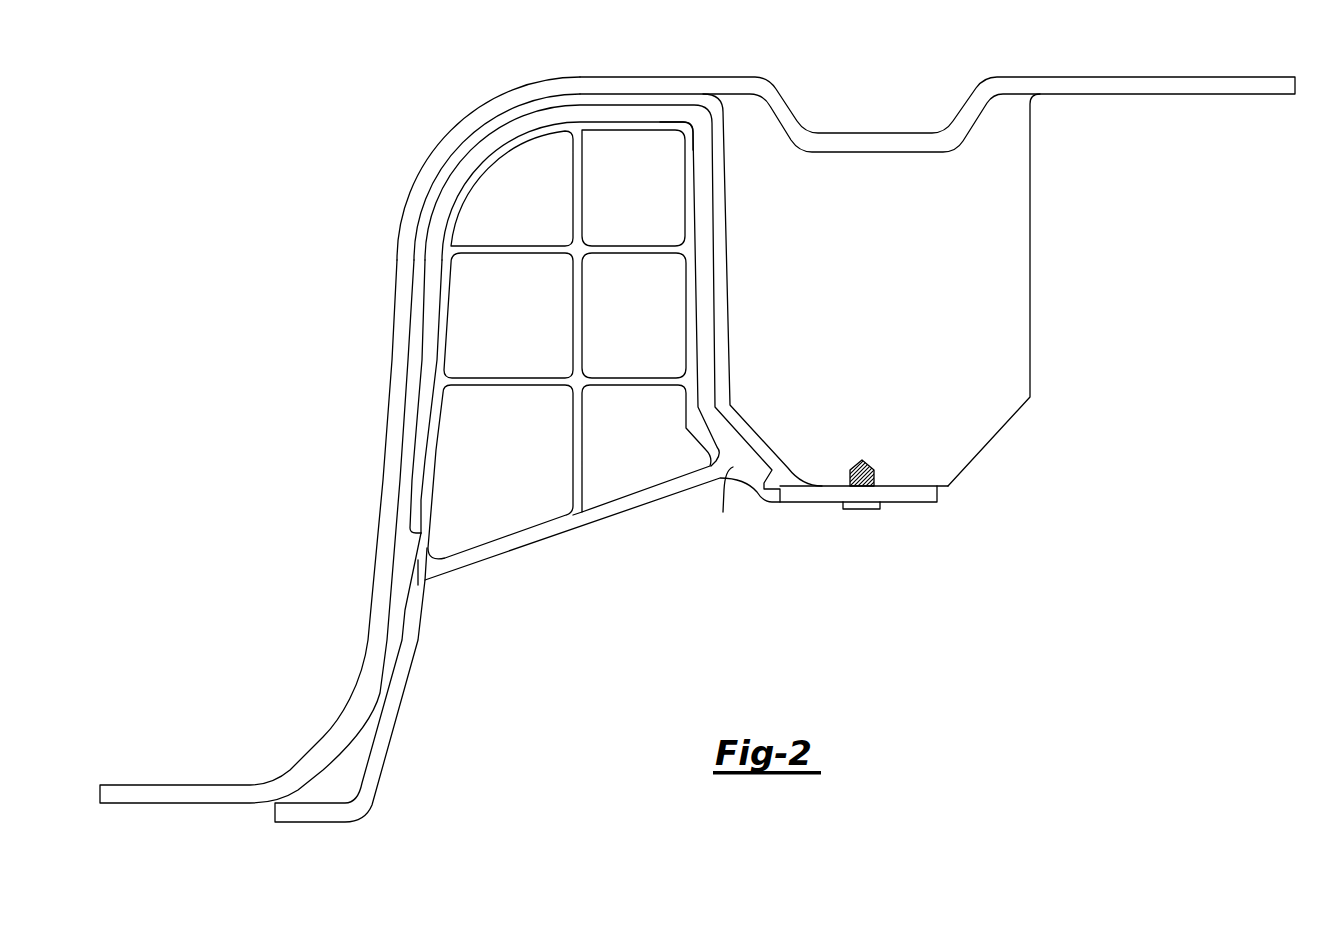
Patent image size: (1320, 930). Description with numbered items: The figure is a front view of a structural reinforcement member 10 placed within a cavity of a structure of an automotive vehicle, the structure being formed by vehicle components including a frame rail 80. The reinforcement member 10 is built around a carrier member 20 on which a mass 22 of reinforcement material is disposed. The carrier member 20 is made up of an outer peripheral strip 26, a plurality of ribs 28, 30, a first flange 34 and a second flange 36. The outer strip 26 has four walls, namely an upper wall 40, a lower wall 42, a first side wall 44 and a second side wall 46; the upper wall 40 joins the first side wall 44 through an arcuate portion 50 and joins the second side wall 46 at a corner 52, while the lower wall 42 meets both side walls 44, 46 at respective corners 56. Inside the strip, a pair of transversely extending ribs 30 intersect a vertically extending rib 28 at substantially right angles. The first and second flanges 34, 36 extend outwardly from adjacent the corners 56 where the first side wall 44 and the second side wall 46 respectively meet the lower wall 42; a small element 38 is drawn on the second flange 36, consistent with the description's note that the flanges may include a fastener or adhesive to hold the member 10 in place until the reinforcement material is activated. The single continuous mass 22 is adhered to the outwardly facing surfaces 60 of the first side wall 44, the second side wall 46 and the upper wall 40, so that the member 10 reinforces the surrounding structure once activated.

The structural reinforcement member 10 is at (697, 572).
The carrier member 20 is at (518, 549).
The mass of reinforcement material 22 is at (702, 190).
The outer peripheral strip 26 is at (695, 280).
The vertically extending rib 28 is at (578, 178).
The transversely extending ribs 30 is at (508, 252).
The first flange 34 is at (375, 757).
The second flange 36 is at (918, 497).
The locator pin 38 is at (862, 460).
The upper wall 40 is at (617, 127).
The lower wall 42 is at (648, 503).
The first side wall 44 is at (452, 322).
The second side wall 46 is at (697, 312).
The arcuate portion 50 is at (497, 152).
The corner 52 is at (668, 127).
The corners 56 is at (432, 578).
The outwardly facing surfaces 60 is at (577, 122).
The frame rail 80 is at (1030, 262).